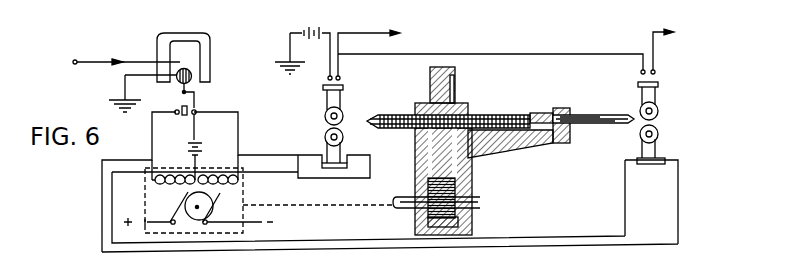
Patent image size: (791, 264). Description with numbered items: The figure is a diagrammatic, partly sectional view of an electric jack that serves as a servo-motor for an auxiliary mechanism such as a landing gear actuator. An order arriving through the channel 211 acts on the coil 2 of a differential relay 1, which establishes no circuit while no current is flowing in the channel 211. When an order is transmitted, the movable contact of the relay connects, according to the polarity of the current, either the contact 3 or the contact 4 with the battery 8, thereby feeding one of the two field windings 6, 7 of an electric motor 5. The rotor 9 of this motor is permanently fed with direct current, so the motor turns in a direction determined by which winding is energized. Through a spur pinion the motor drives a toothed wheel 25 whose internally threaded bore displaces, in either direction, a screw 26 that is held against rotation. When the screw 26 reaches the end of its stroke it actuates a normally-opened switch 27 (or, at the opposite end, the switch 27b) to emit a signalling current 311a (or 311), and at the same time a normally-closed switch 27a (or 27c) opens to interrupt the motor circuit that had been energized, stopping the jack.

The channel 211 is at (89, 57).
The differential relay 1 is at (183, 33).
The coil 2 is at (176, 84).
The contact 3 is at (177, 115).
The contact 4 is at (194, 115).
The electric motor 5 is at (148, 200).
The field winding 6 is at (168, 174).
The field winding 7 is at (231, 178).
The battery 8 is at (202, 146).
The rotor 9 is at (192, 220).
The signalling current 311 is at (346, 40).
The signalling current 311a is at (657, 36).
The normally-opened switch 27b is at (317, 108).
The normally-closed switch 27c is at (325, 140).
The toothed wheel 25 is at (455, 73).
The screw 26 is at (500, 117).
The normally-opened switch 27 is at (658, 109).
The normally-closed switch 27a is at (658, 136).